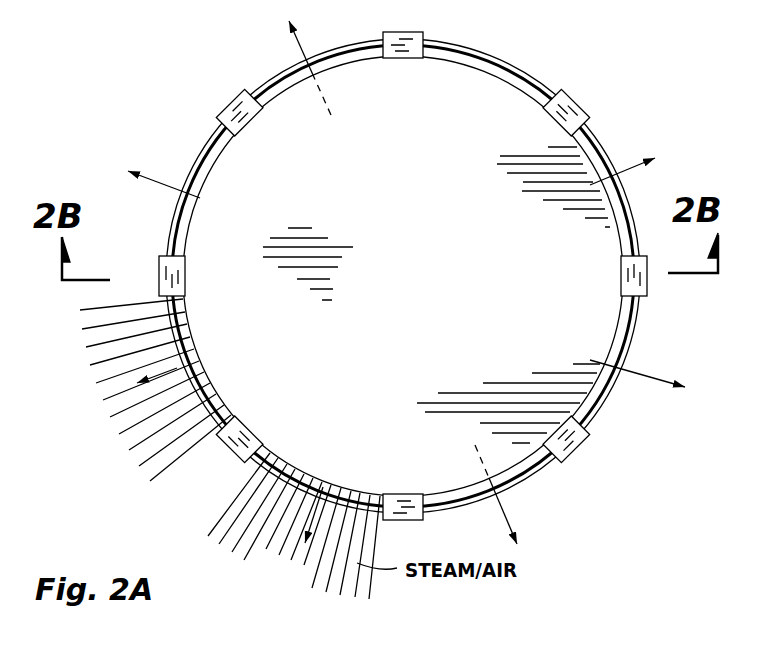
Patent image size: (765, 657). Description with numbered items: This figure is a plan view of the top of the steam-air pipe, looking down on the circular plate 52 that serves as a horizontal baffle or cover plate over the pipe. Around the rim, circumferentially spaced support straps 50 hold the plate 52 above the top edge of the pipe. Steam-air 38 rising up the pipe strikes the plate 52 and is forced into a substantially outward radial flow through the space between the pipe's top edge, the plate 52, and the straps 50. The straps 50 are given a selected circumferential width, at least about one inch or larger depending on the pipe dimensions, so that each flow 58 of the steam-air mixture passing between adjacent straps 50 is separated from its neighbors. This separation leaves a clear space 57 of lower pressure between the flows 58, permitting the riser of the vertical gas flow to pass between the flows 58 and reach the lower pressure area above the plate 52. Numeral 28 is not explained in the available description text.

The cylindrical vessel wall / ring 28 is at (502, 58).
The support straps 50 is at (578, 102).
The circular plate 52 is at (486, 263).
The flow of the steam-air mixture 58 is at (538, 113).
The clear space 57 is at (208, 487).
The steam-air 38 is at (330, 108).